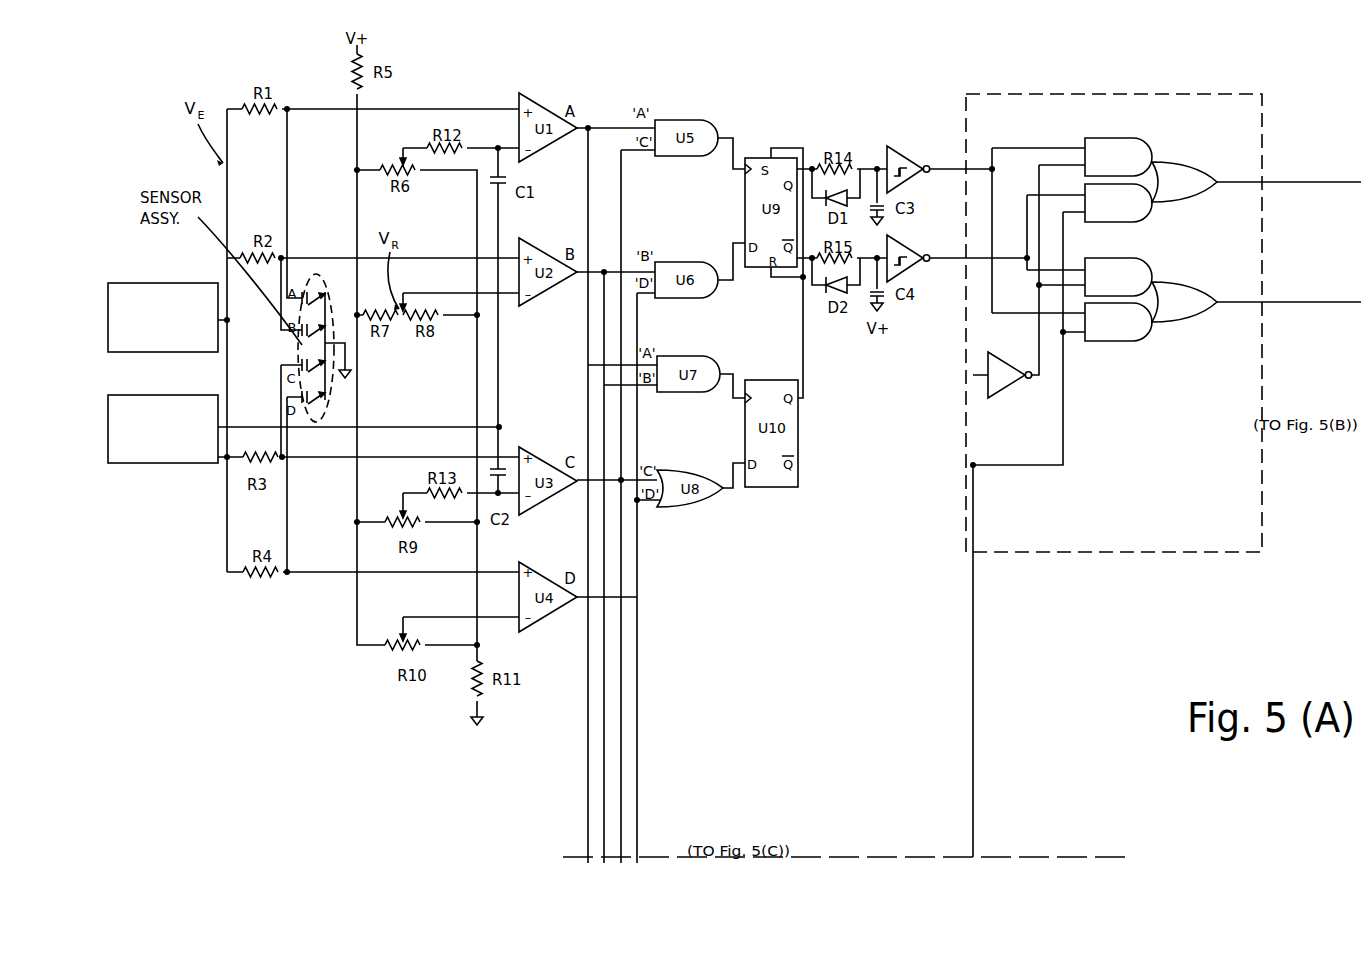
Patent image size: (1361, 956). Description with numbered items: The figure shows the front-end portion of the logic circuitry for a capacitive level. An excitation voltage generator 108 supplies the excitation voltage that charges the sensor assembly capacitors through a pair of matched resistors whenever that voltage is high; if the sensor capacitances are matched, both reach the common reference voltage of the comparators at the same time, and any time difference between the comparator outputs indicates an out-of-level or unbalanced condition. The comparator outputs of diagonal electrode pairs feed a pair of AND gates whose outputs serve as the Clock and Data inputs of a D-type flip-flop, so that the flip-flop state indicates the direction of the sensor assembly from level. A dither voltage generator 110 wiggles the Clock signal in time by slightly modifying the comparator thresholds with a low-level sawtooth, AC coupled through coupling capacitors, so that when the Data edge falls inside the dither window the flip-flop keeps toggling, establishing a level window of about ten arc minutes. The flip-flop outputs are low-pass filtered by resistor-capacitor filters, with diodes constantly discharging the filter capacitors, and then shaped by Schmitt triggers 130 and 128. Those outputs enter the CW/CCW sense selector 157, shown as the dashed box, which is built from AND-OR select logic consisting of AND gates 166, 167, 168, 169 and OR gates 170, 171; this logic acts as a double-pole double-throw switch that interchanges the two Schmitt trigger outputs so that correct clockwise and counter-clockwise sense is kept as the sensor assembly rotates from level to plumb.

The excitation voltage generator 108 is at (133, 283).
The dither voltage generator 110 is at (143, 393).
The Schmitt trigger 128 is at (912, 270).
The Schmitt trigger 130 is at (917, 162).
The CW/CCW sense selector 157 is at (1178, 553).
The AND gate 166 is at (1130, 152).
The AND gate 167 is at (1130, 204).
The AND gate 168 is at (1093, 262).
The AND gate 169 is at (1108, 332).
The OR gate 170 is at (1167, 172).
The OR gate 171 is at (1175, 307).